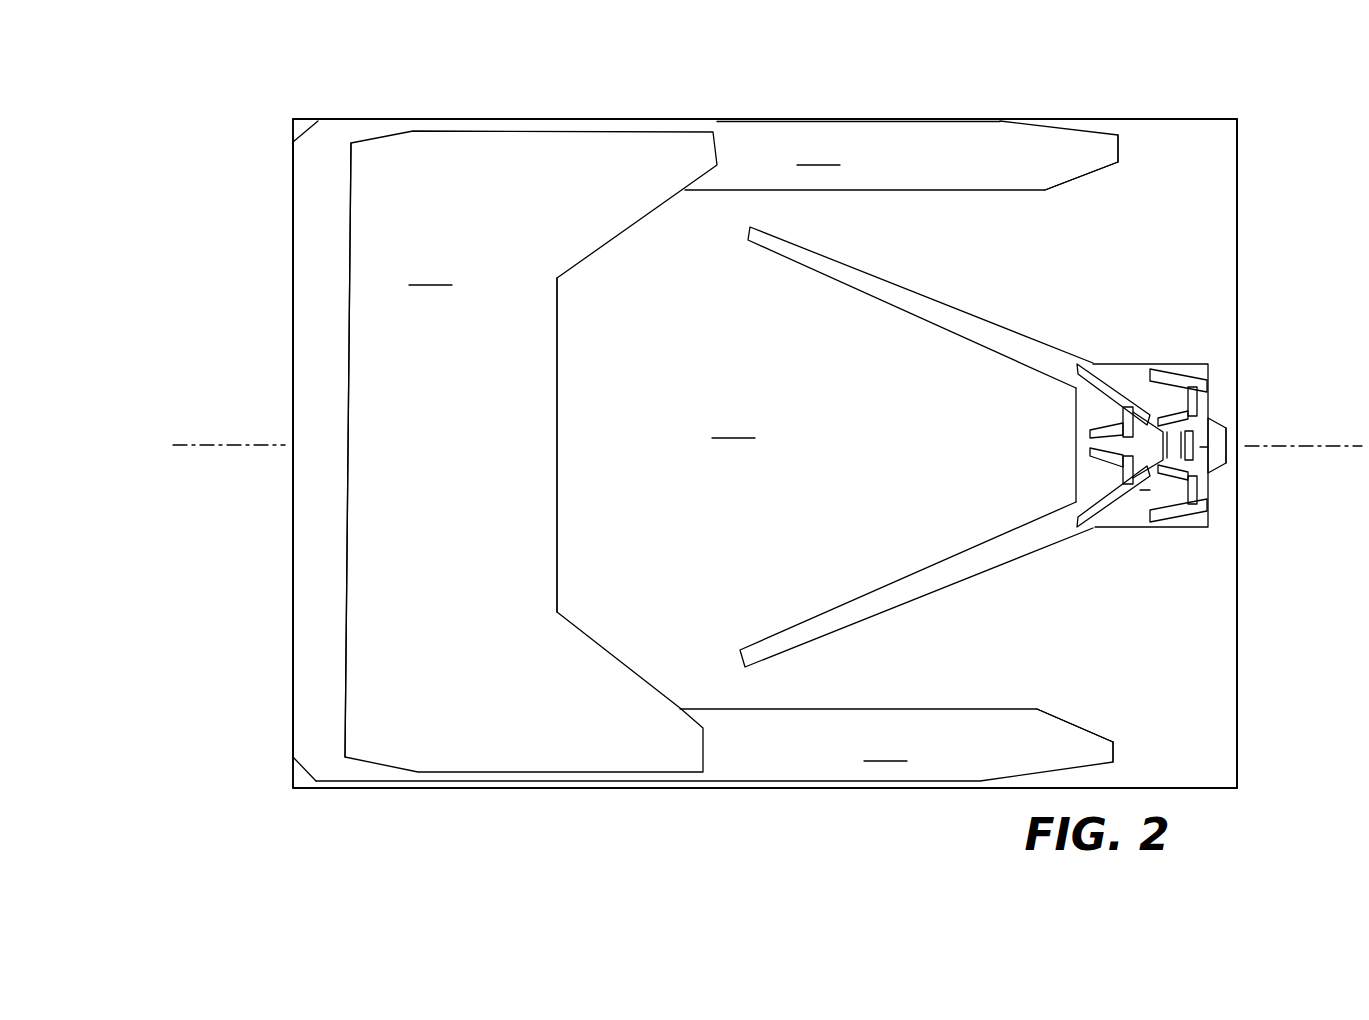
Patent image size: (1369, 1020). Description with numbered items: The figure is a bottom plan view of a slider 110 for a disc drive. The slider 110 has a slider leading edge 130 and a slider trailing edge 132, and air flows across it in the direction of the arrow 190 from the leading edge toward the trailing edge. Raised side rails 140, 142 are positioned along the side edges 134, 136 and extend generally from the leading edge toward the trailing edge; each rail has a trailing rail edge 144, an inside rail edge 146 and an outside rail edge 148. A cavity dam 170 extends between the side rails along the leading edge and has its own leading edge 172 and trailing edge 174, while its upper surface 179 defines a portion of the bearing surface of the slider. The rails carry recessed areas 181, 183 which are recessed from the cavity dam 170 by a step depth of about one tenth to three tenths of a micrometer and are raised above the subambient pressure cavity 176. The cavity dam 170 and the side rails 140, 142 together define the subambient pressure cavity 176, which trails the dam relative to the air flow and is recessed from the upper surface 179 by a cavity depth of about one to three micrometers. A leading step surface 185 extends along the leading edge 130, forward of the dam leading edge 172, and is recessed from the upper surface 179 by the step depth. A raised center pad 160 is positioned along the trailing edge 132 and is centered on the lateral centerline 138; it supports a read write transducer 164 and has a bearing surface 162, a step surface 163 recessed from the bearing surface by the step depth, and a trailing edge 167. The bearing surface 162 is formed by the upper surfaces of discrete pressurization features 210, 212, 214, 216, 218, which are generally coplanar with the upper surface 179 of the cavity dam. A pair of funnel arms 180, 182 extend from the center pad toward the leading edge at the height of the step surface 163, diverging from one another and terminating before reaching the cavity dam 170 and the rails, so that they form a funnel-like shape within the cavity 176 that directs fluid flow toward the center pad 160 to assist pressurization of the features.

The slider 110 is at (1055, 93).
The slider leading edge 130 is at (293, 274).
The slider trailing edge 132 is at (1238, 230).
The side edge 134 is at (627, 788).
The side edge 136 is at (650, 119).
The lateral centerline 138 is at (267, 445).
The side rail 140 is at (888, 115).
The side rail 142 is at (902, 783).
The trailing rail edge 144 is at (1120, 143).
The inside rail edge 146 is at (938, 192).
The outside rail edge 148 is at (805, 118).
The center pad 160 is at (1155, 360).
The bearing surface 162 is at (1138, 417).
The step surface 163 is at (1143, 500).
The read write transducer 164 is at (1220, 418).
The trailing edge 167 is at (1200, 447).
The cavity dam 170 is at (531, 451).
The leading edge 172 is at (343, 561).
The trailing edge 174 is at (557, 408).
The subambient pressure cavity 176 is at (894, 445).
The upper surface 179 is at (450, 725).
The funnel arm 180 is at (855, 598).
The recessed area 181 is at (901, 155).
The funnel arm 182 is at (862, 287).
The recessed area 183 is at (714, 745).
The leading step surface 185 is at (308, 635).
The arrow 190 is at (218, 548).
The pressurization feature 210 is at (1093, 363).
The pressurization feature 212 is at (1170, 380).
The pressurization feature 214 is at (1217, 430).
The pressurization feature 216 is at (1172, 510).
The pressurization feature 218 is at (1094, 515).